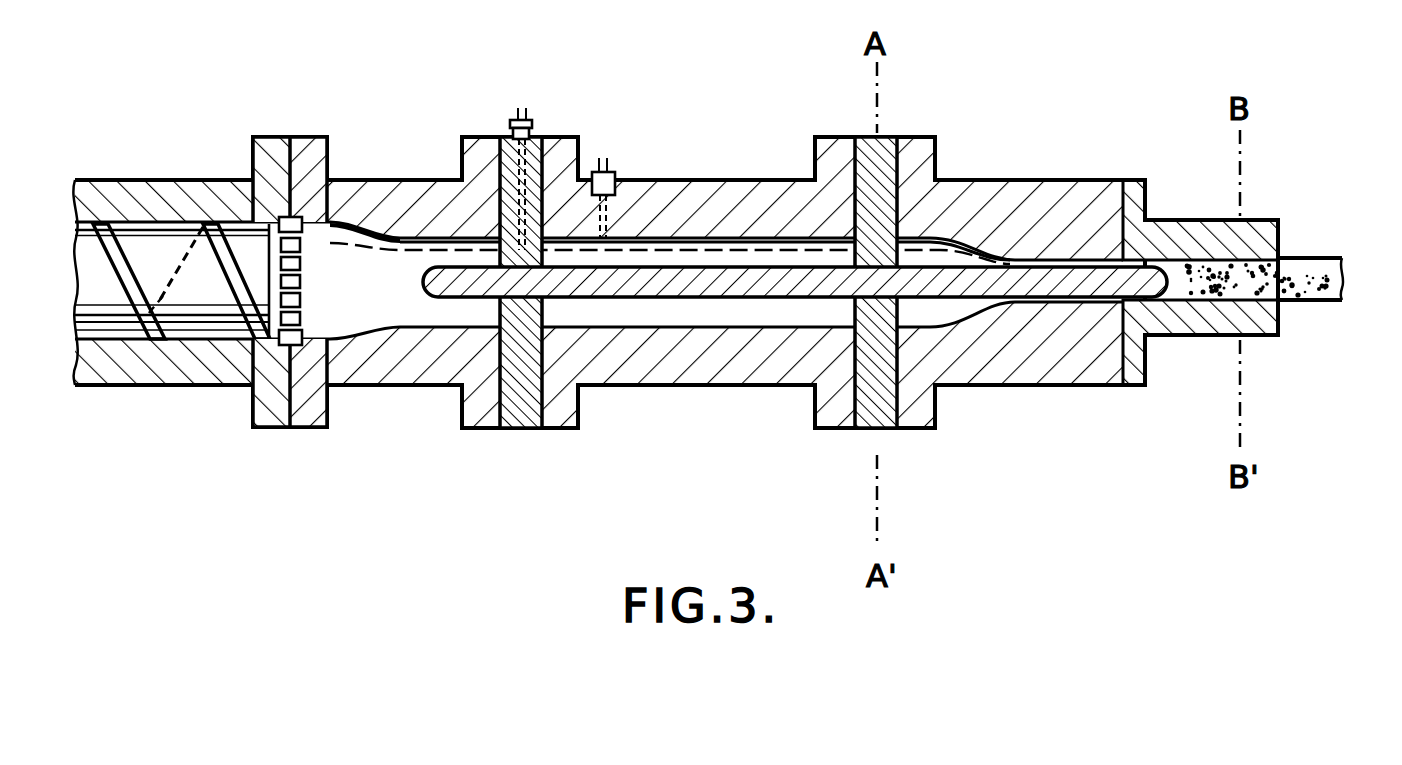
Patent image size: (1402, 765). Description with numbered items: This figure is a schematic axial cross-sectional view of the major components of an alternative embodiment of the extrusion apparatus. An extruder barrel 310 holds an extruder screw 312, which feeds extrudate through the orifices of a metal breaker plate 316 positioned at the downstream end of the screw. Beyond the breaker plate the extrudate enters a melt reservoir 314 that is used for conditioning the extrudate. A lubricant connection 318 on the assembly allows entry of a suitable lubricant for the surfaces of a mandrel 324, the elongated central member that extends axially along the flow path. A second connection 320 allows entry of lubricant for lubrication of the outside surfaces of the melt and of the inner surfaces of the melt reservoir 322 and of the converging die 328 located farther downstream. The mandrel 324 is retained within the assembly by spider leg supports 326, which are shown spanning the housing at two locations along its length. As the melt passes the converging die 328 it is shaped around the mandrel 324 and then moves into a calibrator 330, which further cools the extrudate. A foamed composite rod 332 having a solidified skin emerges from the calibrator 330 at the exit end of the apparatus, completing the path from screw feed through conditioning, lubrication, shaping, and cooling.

The extruder barrel 310 is at (167, 180).
The extruder screw 312 is at (203, 313).
The melt reservoir 314 is at (413, 180).
The metal breaker plate 316 is at (302, 250).
The lubricant connection 318 is at (522, 98).
The connection 320 is at (603, 147).
The melt reservoir 322 is at (715, 180).
The mandrel 324 is at (703, 297).
The spider leg supports 326 is at (520, 428).
The converging die 328 is at (1037, 180).
The calibrator 330 is at (1210, 218).
The foamed composite rod 332 is at (1318, 262).